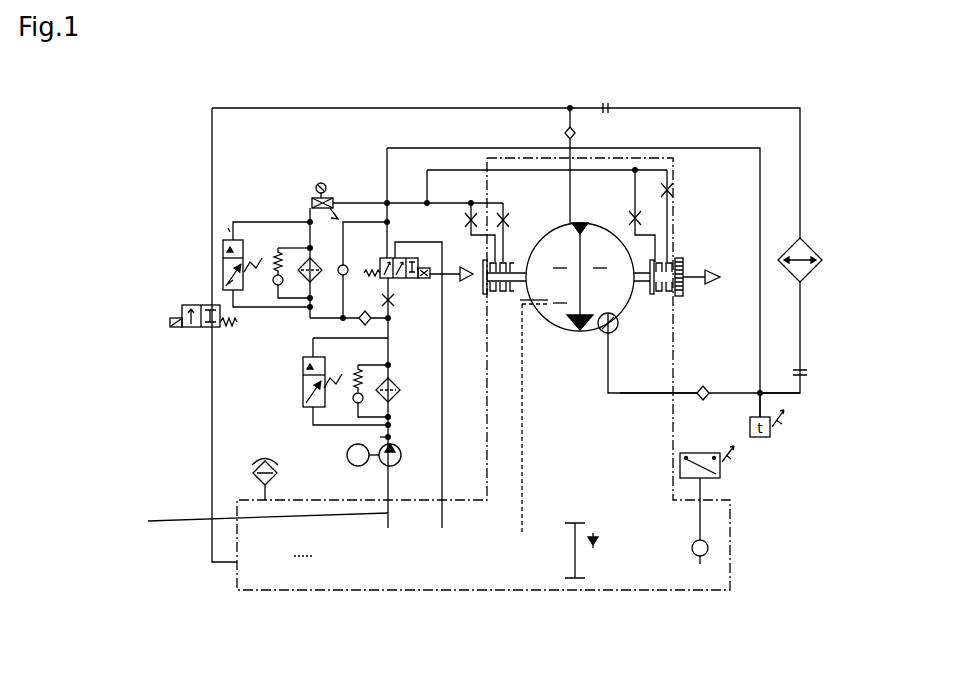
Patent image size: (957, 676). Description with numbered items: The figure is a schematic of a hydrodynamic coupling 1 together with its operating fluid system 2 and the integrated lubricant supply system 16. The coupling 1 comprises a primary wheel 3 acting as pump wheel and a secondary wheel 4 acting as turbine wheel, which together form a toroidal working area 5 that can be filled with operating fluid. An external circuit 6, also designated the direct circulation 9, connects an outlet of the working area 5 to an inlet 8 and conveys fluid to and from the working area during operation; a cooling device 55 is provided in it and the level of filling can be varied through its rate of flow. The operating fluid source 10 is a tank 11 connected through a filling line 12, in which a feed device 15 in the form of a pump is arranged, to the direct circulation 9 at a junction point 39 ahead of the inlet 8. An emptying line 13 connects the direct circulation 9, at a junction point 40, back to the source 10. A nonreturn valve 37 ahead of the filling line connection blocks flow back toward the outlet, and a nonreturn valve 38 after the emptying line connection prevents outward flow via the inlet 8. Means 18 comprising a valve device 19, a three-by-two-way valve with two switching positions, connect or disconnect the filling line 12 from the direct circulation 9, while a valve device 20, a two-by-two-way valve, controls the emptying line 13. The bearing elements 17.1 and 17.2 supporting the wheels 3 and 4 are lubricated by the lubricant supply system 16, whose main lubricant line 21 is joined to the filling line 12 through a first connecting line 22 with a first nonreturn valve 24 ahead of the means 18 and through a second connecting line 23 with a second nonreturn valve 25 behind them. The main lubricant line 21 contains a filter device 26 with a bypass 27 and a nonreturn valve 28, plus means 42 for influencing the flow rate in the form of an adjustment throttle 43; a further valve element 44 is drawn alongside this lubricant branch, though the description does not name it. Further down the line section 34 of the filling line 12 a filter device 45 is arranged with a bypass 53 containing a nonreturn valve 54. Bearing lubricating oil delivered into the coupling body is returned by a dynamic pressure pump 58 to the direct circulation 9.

The hydrodynamic coupling 1 is at (577, 378).
The operating fluid system 2 is at (775, 98).
The primary wheel 3 is at (560, 259).
The secondary wheel 4 is at (600, 259).
The toroidal working area 5 is at (560, 294).
The external circuit 6 is at (656, 441).
The inlet 8 is at (574, 224).
The direct circulation 9 is at (637, 396).
The operating fluid source 10 is at (338, 568).
The tank 11 is at (303, 545).
The filling line 12 is at (252, 520).
The emptying line 13 is at (212, 415).
The feed device 15 is at (399, 467).
The lubricant supply system 16 is at (293, 187).
The bearing element 17.1 is at (502, 297).
The bearing element 17.2 is at (679, 255).
The means for interrupting the flow of operating fluid 18 is at (434, 467).
The valve device 19 is at (416, 285).
The valve device 20 is at (184, 302).
The main lubricant line 21 is at (309, 192).
The first connecting line 22 is at (360, 322).
The second connecting line 23 is at (346, 264).
The first nonreturn valve 24 is at (387, 148).
The second nonreturn valve 25 is at (300, 258).
The filter device 26 is at (337, 266).
The bypass 27 is at (229, 229).
The nonreturn valve 28 is at (236, 291).
The line section 34 is at (354, 403).
The nonreturn valve 37 is at (710, 392).
The nonreturn valve 38 is at (573, 128).
The junction point 39 is at (765, 392).
The junction point 40 is at (570, 108).
The means for influencing the rate of flow 42 is at (324, 181).
The adjustment throttle 43 is at (336, 210).
The pressure reducing valve 44 is at (222, 250).
The filter device 45 is at (399, 403).
The bypass 53 is at (346, 352).
The nonreturn valve 54 is at (388, 437).
The cooling device 55 is at (820, 262).
The dynamic pressure pump 58 is at (607, 334).